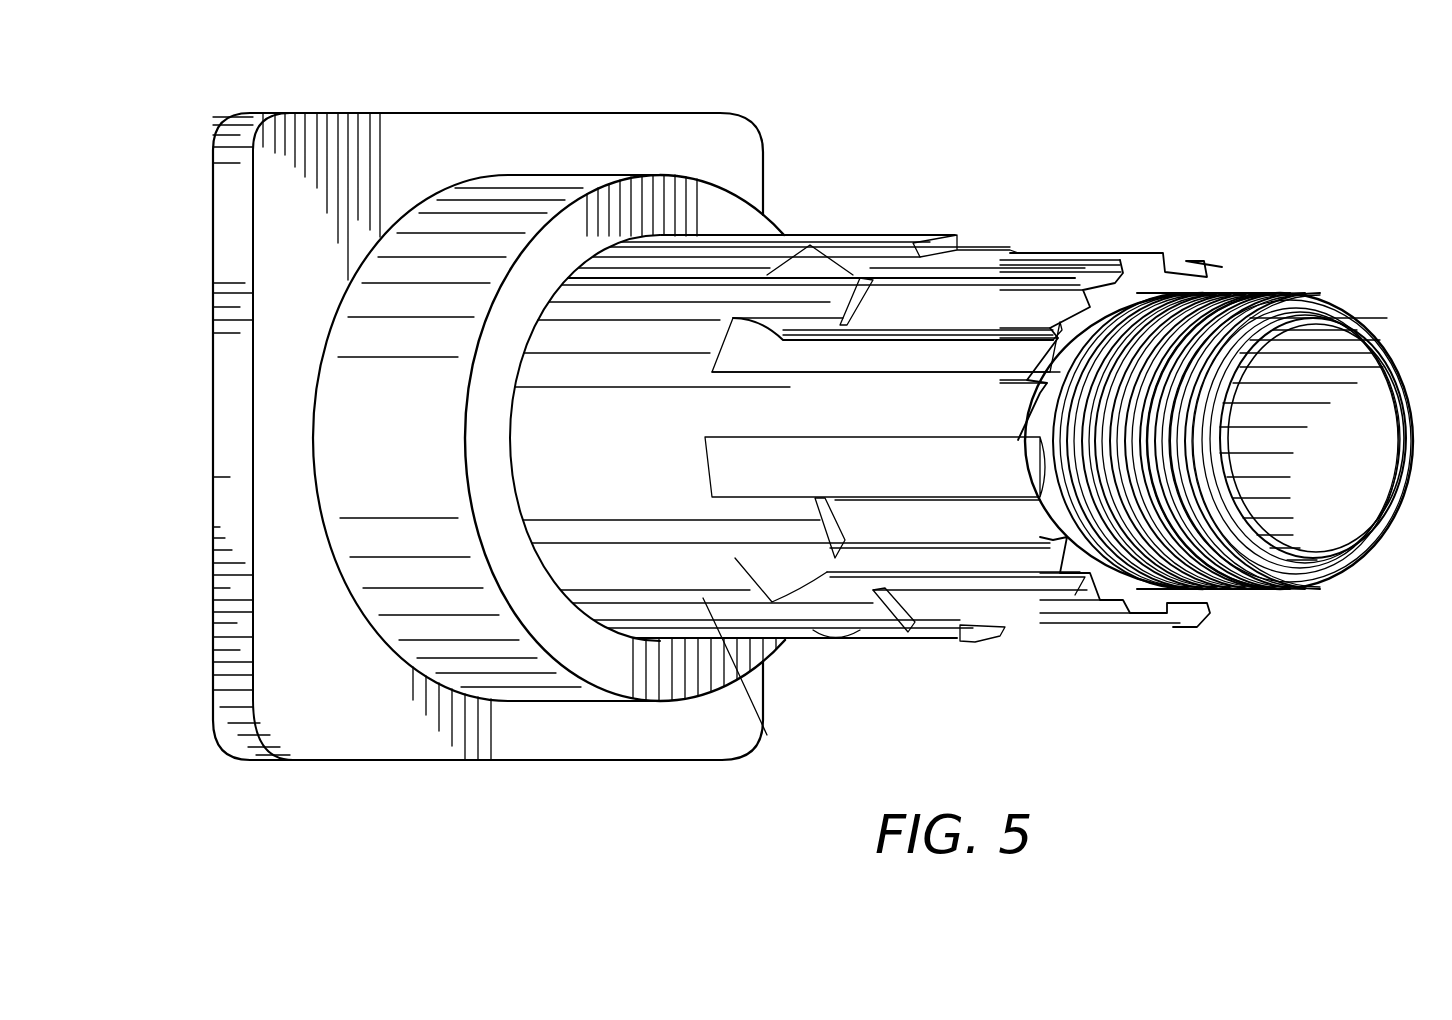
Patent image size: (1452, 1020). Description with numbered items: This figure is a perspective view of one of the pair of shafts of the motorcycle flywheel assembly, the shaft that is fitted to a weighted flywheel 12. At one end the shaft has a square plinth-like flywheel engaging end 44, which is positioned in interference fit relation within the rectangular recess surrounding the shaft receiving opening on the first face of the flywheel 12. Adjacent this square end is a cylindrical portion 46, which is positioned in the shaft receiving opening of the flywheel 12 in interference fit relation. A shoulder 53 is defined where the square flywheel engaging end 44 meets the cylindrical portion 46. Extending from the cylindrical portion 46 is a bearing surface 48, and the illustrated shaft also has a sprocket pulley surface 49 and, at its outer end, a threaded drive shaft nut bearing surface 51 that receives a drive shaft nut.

The weighted flywheel 12 is at (988, 217).
The square plinth-like flywheel engaging end 44 is at (215, 472).
The cylindrical portion 46 is at (418, 600).
The bearing surface 48 is at (703, 600).
The sprocket pulley surface 49 is at (1035, 563).
The threaded drive shaft nut bearing surface 51 is at (1160, 327).
The shoulder 53 is at (392, 727).